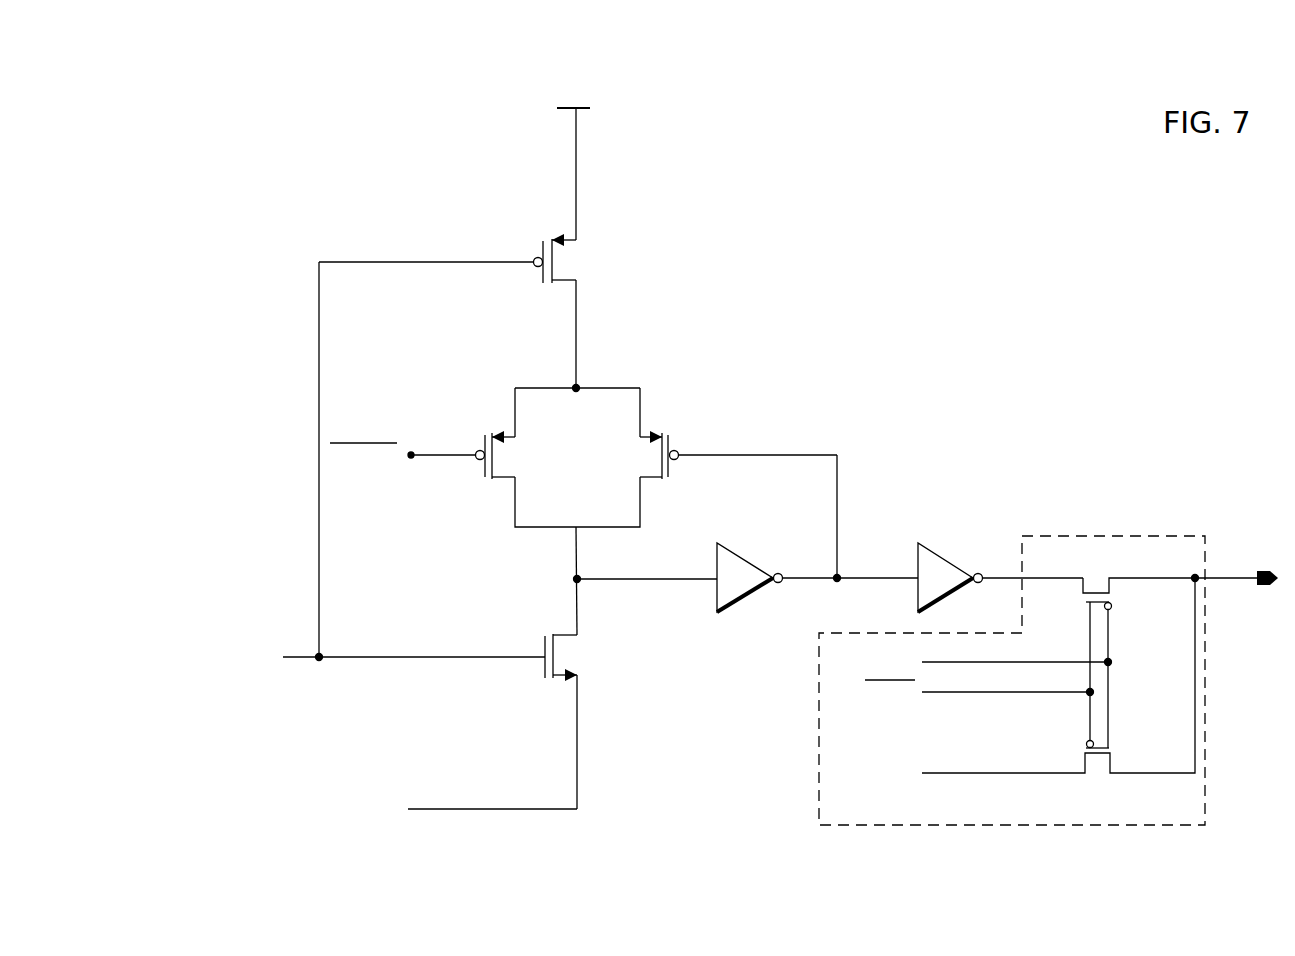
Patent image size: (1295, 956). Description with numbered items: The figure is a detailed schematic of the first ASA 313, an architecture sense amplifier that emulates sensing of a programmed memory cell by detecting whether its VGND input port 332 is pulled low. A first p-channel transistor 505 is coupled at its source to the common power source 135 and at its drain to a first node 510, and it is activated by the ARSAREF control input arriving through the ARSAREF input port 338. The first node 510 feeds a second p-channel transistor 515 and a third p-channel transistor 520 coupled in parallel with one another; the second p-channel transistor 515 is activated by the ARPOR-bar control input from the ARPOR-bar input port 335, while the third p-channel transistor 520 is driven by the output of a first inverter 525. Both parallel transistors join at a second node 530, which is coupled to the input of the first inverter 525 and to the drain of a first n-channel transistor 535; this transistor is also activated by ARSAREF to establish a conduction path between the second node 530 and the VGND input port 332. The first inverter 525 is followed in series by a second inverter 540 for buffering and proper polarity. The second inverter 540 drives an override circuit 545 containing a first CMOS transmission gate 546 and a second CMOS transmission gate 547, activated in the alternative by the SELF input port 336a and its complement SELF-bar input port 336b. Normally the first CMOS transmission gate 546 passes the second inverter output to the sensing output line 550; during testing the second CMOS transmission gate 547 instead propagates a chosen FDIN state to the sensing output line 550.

The first ASA 313 is at (848, 252).
The common power source 135 is at (579, 106).
The first p-channel transistor 505 is at (576, 262).
The first node 510 is at (576, 388).
The second p-channel transistor 515 is at (503, 456).
The third p-channel transistor 520 is at (652, 456).
The first inverter 525 is at (757, 587).
The second node 530 is at (572, 577).
The first n-channel transistor 535 is at (572, 657).
The second inverter 540 is at (958, 587).
The ARPOR-bar input port 335 is at (411, 460).
The ARSAREF input port 338 is at (285, 659).
The VGND input port 332 is at (408, 811).
The override circuit 545 is at (992, 826).
The first CMOS transmission gate 546 is at (1097, 585).
The second CMOS transmission gate 547 is at (1098, 775).
The SELF input port 336a is at (1046, 662).
The SELF-bar input port 336b is at (992, 773).
The sensing output line 550 is at (1237, 581).